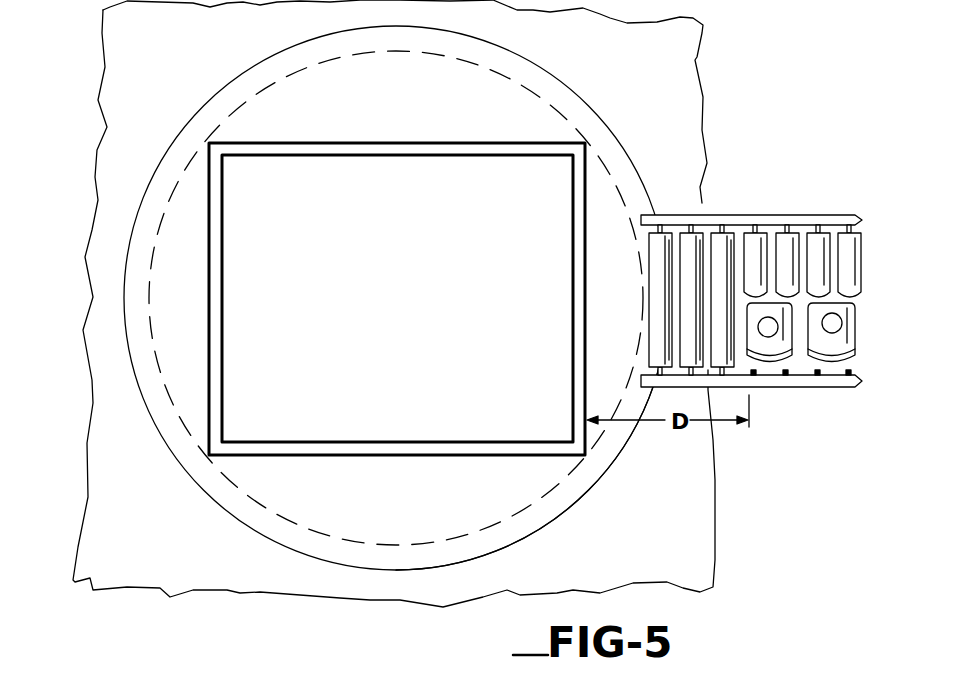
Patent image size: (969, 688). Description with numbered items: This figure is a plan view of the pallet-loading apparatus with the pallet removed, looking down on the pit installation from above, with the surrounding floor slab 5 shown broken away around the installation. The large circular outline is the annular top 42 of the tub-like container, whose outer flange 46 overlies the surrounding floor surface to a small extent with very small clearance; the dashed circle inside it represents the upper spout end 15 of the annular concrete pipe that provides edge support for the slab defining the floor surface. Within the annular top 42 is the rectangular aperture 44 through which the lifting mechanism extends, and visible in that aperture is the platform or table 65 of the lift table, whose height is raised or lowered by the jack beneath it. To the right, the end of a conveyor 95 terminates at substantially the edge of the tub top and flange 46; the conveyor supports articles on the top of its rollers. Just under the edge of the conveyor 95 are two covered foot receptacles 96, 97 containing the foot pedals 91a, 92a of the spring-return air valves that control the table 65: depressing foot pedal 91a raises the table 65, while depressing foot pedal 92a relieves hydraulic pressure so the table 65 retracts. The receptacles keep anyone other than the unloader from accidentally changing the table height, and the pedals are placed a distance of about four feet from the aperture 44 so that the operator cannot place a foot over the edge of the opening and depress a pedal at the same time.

The floor surface 5 is at (702, 503).
The upper spout end 15 is at (468, 532).
The annular top 42 is at (507, 107).
The rectangular aperture 44 is at (592, 157).
The flange 46 is at (543, 513).
The platform or table 65 is at (450, 285).
The conveyor 95 is at (752, 301).
The covered foot receptacle 96 is at (780, 376).
The covered foot receptacle 97 is at (835, 380).
The foot pedal 91a is at (768, 335).
The foot pedal 92a is at (838, 385).